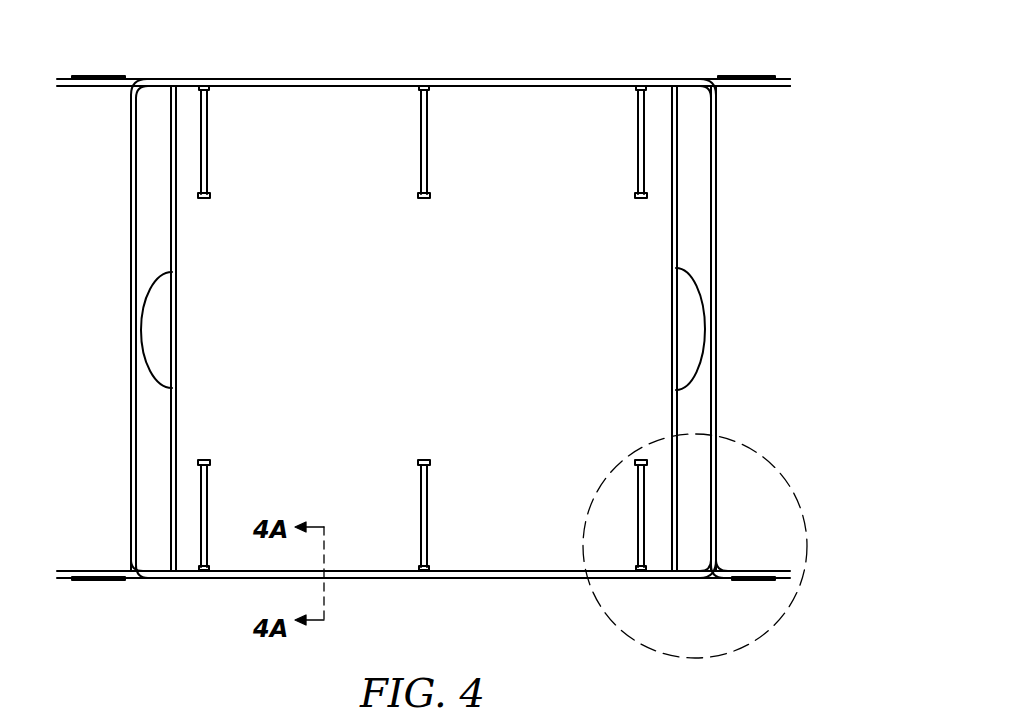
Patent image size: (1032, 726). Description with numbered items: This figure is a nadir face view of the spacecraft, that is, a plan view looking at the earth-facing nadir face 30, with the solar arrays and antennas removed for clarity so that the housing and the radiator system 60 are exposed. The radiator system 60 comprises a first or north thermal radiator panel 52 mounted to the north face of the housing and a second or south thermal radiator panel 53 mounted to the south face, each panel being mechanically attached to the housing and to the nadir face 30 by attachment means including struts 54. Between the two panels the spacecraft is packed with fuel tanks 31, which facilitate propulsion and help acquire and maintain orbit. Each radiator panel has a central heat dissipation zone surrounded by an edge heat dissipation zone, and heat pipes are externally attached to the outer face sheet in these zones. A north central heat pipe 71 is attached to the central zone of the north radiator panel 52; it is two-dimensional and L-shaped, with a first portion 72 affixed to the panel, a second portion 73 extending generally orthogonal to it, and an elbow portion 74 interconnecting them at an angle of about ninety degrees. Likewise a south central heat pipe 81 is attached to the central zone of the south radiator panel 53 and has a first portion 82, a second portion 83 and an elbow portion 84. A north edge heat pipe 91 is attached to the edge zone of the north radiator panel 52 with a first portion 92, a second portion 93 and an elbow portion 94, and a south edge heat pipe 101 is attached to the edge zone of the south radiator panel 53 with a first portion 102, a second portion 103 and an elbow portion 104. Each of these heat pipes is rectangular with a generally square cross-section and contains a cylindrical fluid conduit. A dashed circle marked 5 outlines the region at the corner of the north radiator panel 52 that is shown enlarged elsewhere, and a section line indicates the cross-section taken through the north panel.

The detail region of FIG. 5 is at (762, 640).
The nadir face 30 is at (640, 271).
The fuel tanks 31 is at (157, 330).
The north thermal radiator panel 52 is at (342, 570).
The south thermal radiator panel 53 is at (362, 87).
The struts 54 is at (420, 178).
The radiator system 60 is at (477, 347).
The north central heat pipe 71 is at (462, 580).
The first portion 72 is at (525, 580).
The second portion 73 is at (716, 525).
The elbow portion 74 is at (713, 578).
The south central heat pipe 81 is at (423, 43).
The first portion 82 is at (213, 78).
The second portion 83 is at (128, 157).
The elbow portion 84 is at (130, 85).
The north edge heat pipe 91 is at (747, 580).
The first portion 92 is at (732, 582).
The second portion 93 is at (717, 492).
The elbow portion 94 is at (720, 570).
The south edge heat pipe 101 is at (762, 77).
The first portion 102 is at (743, 77).
The second portion 103 is at (717, 140).
The elbow portion 104 is at (717, 88).